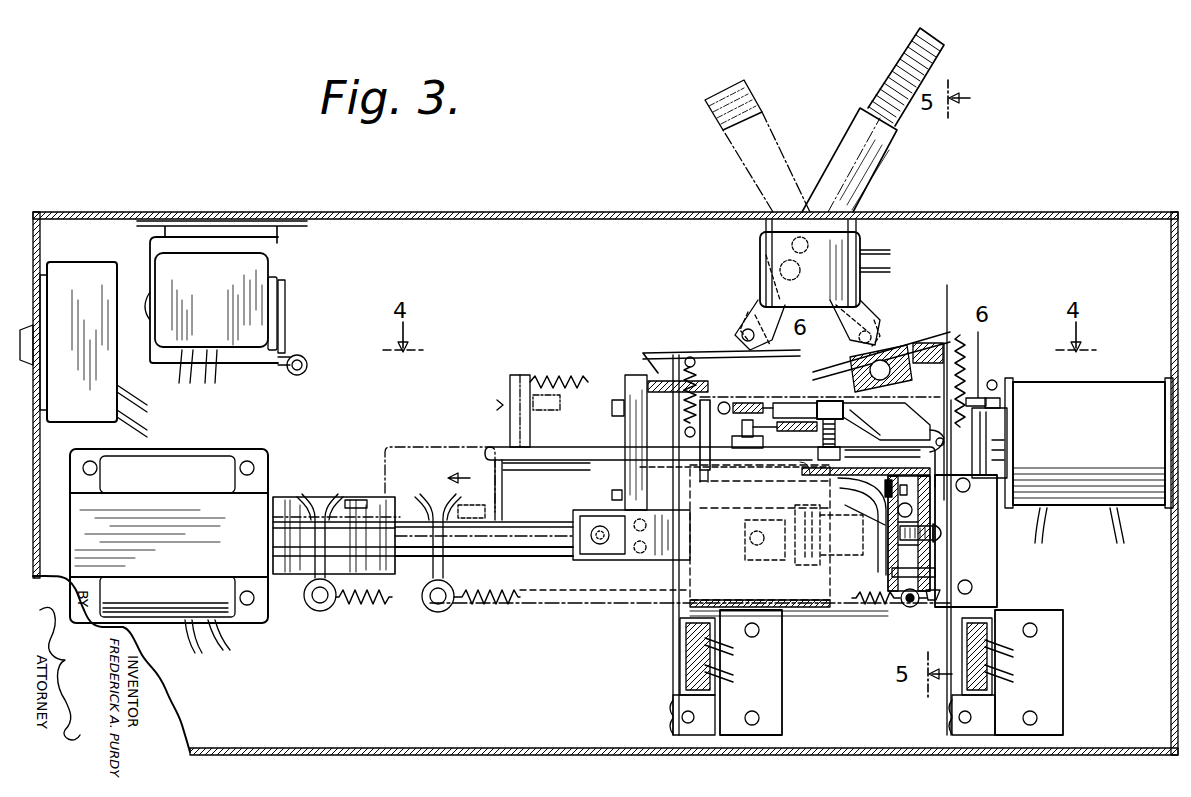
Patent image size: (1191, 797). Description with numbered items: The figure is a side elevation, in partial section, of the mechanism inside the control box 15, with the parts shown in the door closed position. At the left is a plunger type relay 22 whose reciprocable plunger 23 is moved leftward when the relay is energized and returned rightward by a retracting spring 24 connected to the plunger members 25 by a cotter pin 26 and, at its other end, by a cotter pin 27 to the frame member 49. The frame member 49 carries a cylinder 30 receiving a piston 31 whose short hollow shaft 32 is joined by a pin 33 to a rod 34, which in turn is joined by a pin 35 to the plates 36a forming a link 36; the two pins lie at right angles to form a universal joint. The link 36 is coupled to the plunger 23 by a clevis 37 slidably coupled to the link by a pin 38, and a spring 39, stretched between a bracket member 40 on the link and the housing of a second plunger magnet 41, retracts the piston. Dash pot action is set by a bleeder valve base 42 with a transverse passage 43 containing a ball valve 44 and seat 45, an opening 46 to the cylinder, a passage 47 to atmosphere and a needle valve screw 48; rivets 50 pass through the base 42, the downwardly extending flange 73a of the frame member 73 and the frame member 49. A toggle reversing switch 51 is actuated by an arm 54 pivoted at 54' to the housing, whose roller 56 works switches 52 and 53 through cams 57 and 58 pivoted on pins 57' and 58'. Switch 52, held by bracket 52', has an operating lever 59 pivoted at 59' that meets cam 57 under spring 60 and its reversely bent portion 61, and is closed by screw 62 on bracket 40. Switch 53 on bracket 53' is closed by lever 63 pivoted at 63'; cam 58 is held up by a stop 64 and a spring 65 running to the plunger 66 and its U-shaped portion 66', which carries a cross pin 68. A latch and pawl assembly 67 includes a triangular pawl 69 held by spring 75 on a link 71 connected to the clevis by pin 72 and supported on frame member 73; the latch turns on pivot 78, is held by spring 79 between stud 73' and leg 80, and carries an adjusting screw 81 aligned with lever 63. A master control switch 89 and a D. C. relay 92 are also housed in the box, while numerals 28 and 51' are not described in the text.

The control box 15 is at (545, 212).
The plunger type relay 22 is at (257, 449).
The reciprocable plunger 23 is at (390, 504).
The retracting spring 24 is at (358, 608).
The plunger members 25 is at (296, 498).
The cotter pin 26 is at (312, 614).
The cotter pin 27 is at (904, 612).
The insulating bar 28 is at (944, 560).
The cylinder 30 is at (688, 522).
The piston 31 is at (808, 606).
The short hollow shaft 32 is at (855, 566).
The pin 33 is at (766, 512).
The rod 34 is at (752, 568).
The pin 35 is at (744, 535).
The link 36 is at (582, 563).
The plates 36a is at (660, 568).
The clevis 37 is at (526, 564).
The pin 38 is at (612, 484).
The spring 39 is at (563, 382).
The bracket member 40 is at (524, 374).
The second plunger magnet 41 is at (1089, 460).
The base 42 is at (912, 508).
The transverse passage 43 is at (922, 481).
The ball valve 44 is at (880, 510).
The seat 45 is at (900, 508).
The opening 46 is at (888, 498).
The passage 47 is at (922, 537).
The screw 48 is at (922, 523).
The frame member 49 is at (946, 604).
The rivets 50 is at (924, 578).
The reversing switch 51 is at (828, 266).
The switch block shaft 51' is at (747, 277).
The switch 52 is at (685, 656).
The bracket 52' is at (767, 672).
The control switch 53 is at (1000, 642).
The bracket 53' is at (1051, 672).
The arm 54 is at (824, 120).
The pivot 54' is at (785, 263).
The roller 56 is at (742, 316).
The rocker arm or cam 57 is at (733, 320).
The pin 57' is at (740, 326).
The rocker arm or cam 58 is at (872, 322).
The pin 58' is at (855, 319).
The operating lever 59 is at (667, 672).
The pivot 59' is at (690, 746).
The spring 60 is at (688, 355).
The reversely bent portion 61 is at (660, 354).
The screw 62 is at (496, 408).
The lever 63 is at (949, 714).
The pivot 63' is at (957, 746).
The stop 64 is at (928, 352).
The spring 65 is at (963, 366).
The plunger 66 is at (1011, 443).
The U-shaped plunger portion 66' is at (1020, 414).
The latch and pawl assembly 67 is at (835, 376).
The cross pin 68 is at (914, 458).
The pawl 69 is at (908, 416).
The link 71 is at (408, 444).
The pin 72 is at (353, 500).
The frame member 73 is at (546, 478).
The fixed stud 73' is at (712, 482).
The downwardly extending flange 73a is at (950, 590).
The spring 75 is at (800, 426).
The pivot 78 is at (800, 470).
The spring 79 is at (764, 406).
The leg 80 is at (793, 390).
The adjusting screw 81 is at (970, 389).
The master control switch 89 is at (83, 349).
The D. C. relay 92 is at (222, 302).